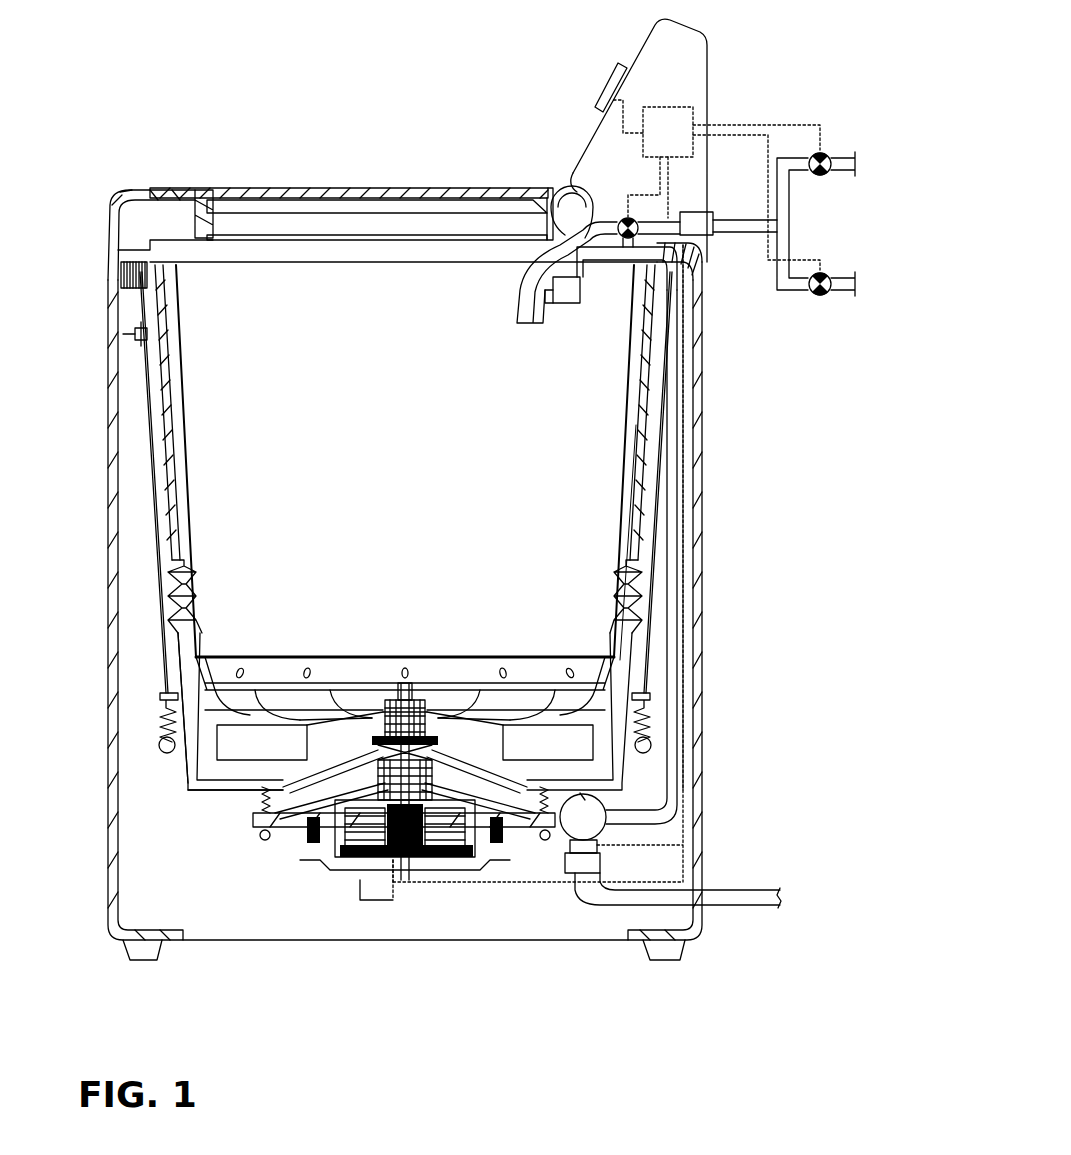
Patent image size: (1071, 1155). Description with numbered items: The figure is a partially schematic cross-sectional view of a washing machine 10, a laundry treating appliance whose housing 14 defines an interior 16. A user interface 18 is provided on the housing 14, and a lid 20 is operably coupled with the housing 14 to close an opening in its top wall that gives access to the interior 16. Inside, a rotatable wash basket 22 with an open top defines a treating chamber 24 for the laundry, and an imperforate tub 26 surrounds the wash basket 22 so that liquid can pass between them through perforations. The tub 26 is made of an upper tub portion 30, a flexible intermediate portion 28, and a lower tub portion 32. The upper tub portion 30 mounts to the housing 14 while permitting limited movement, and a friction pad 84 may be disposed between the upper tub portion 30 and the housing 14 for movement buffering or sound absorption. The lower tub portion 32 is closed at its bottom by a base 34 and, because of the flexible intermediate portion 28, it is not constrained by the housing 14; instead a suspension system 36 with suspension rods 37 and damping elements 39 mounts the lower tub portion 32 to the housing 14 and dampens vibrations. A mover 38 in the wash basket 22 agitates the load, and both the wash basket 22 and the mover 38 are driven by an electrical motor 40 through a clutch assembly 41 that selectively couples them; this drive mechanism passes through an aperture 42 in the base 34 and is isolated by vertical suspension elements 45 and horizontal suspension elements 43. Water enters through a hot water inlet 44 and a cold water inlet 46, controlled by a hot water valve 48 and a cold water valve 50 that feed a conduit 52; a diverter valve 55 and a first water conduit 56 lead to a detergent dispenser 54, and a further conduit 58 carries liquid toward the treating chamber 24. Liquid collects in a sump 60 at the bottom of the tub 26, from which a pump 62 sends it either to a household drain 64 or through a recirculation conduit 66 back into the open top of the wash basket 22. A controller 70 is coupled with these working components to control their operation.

The washing machine 10 is at (139, 99).
The housing 14 is at (102, 262).
The interior 16 is at (175, 258).
The user interface 18 is at (604, 96).
The lid 20 is at (362, 188).
The wash basket 22 is at (200, 495).
The treating chamber 24 is at (395, 454).
The tub 26 is at (150, 406).
The flexible intermediate portion 28 is at (180, 608).
The upper tub portion 30 is at (150, 349).
The lower tub portion 32 is at (215, 793).
The base 34 is at (213, 800).
The suspension system 36 is at (665, 492).
The suspension rods 37 is at (655, 532).
The mover 38 is at (560, 705).
The damping elements 39 is at (165, 718).
The electrical motor 40 is at (358, 860).
The clutch assembly 41 is at (403, 720).
The aperture 42 is at (440, 745).
The horizontal suspension elements 43 is at (378, 740).
The hot water inlet 44 is at (848, 157).
The vertical suspension elements 45 is at (260, 805).
The cold water inlet 46 is at (848, 283).
The hot water valve 48 is at (822, 176).
The cold water valve 50 is at (820, 296).
The conduit 52 is at (748, 222).
The detergent dispenser 54 is at (583, 288).
The diverter valve 55 is at (620, 220).
The first water conduit 56 is at (633, 253).
The conduit 58 is at (522, 290).
The sump 60 is at (585, 796).
The pump 62 is at (543, 835).
The household drain 64 is at (727, 897).
The recirculation conduit 66 is at (680, 572).
The controller 70 is at (673, 117).
The friction pad 84 is at (134, 277).